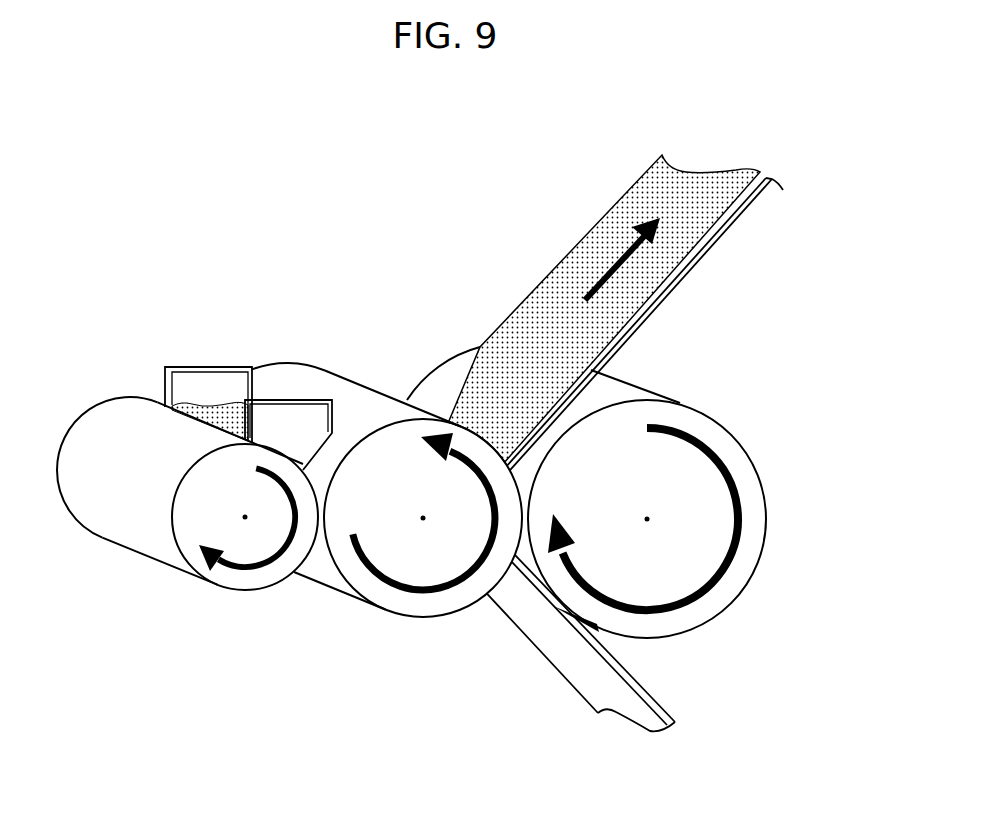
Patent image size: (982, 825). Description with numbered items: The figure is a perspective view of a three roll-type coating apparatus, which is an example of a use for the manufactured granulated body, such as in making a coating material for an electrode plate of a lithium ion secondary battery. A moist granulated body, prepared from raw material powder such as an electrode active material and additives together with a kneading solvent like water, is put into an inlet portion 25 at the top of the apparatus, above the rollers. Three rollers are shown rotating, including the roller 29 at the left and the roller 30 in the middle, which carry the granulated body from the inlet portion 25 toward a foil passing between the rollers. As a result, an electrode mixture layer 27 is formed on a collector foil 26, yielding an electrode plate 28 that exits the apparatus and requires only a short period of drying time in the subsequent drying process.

The inlet portion 25 is at (208, 390).
The collector foil 26 is at (577, 684).
The electrode mixture layer 27 is at (665, 180).
The electrode plate 28 is at (728, 168).
The supply roller 29 is at (190, 535).
The developing roller 30 is at (378, 458).